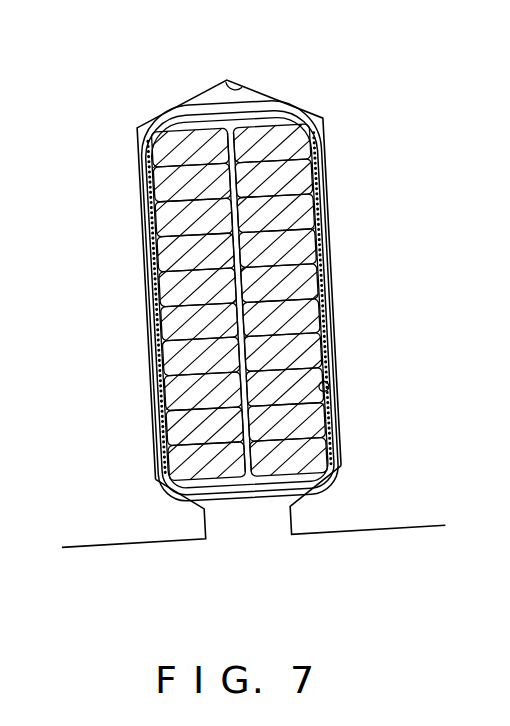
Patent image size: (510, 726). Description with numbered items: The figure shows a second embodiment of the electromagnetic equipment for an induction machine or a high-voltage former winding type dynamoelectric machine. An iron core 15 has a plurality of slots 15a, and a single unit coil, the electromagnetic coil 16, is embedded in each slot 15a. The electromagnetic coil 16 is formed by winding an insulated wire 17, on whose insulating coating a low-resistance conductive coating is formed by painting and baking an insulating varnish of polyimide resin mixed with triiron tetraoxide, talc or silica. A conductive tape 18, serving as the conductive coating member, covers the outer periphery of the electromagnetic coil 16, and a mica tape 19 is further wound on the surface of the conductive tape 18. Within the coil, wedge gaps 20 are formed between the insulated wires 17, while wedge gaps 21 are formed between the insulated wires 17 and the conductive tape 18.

The iron core 15 is at (105, 528).
The slot 15a is at (227, 80).
The electromagnetic coil 16 is at (318, 115).
The insulated wire 17 is at (300, 180).
The conductive tape 18 is at (325, 397).
The mica tape 19 is at (334, 342).
The wedge gaps 20 is at (224, 172).
The wedge gaps 21 is at (153, 237).